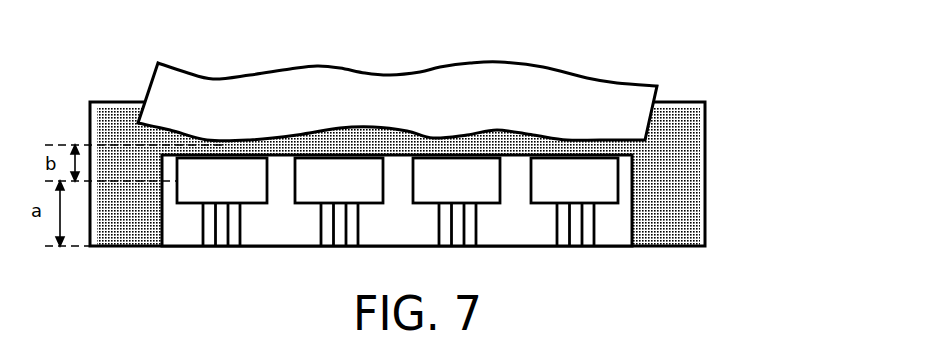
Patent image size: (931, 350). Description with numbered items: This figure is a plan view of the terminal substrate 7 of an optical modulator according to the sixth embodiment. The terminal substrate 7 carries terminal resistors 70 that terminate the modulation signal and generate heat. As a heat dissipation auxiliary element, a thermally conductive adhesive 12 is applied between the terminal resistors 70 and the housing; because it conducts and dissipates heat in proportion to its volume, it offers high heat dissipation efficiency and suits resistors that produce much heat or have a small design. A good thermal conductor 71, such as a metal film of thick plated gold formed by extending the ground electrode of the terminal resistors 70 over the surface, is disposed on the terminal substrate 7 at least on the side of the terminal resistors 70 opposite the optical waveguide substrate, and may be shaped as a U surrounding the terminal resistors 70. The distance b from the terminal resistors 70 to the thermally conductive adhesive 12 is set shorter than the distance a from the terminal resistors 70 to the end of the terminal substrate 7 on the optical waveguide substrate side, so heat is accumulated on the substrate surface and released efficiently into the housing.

The terminal substrate 7 is at (469, 208).
The thermally conductive adhesive 12 is at (581, 91).
The terminal resistors 70 is at (604, 190).
The good thermal conductor 71 is at (673, 153).